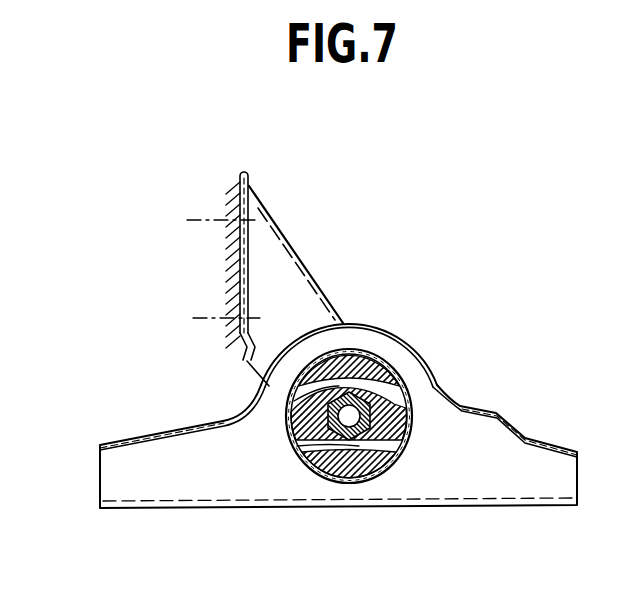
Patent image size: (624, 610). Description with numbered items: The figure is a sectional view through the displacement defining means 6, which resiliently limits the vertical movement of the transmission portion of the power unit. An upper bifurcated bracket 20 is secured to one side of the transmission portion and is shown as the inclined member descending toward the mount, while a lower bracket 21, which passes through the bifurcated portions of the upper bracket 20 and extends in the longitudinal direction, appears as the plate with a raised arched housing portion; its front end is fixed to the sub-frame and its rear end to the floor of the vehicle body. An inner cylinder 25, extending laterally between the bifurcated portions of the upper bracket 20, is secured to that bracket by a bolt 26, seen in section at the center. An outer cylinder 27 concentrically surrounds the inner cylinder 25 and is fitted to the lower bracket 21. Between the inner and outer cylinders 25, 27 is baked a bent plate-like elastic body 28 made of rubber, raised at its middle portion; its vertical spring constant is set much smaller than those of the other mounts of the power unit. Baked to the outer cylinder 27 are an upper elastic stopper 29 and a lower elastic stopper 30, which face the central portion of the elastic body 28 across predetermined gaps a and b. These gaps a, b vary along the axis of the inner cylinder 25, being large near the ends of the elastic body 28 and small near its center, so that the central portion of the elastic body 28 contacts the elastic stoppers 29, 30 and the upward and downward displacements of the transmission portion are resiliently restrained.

The displacement defining means 6 is at (421, 318).
The upper bifurcated bracket 20 is at (277, 246).
The lower bracket 21 is at (480, 443).
The inner cylinder 25 is at (368, 423).
The bolt 26 is at (375, 416).
The outer cylinder 27 is at (407, 371).
The elastic body 28 is at (298, 416).
The upper elastic stopper 29 is at (349, 416).
The lower elastic stopper 30 is at (349, 416).
The gap a is at (296, 411).
The gap b is at (316, 471).